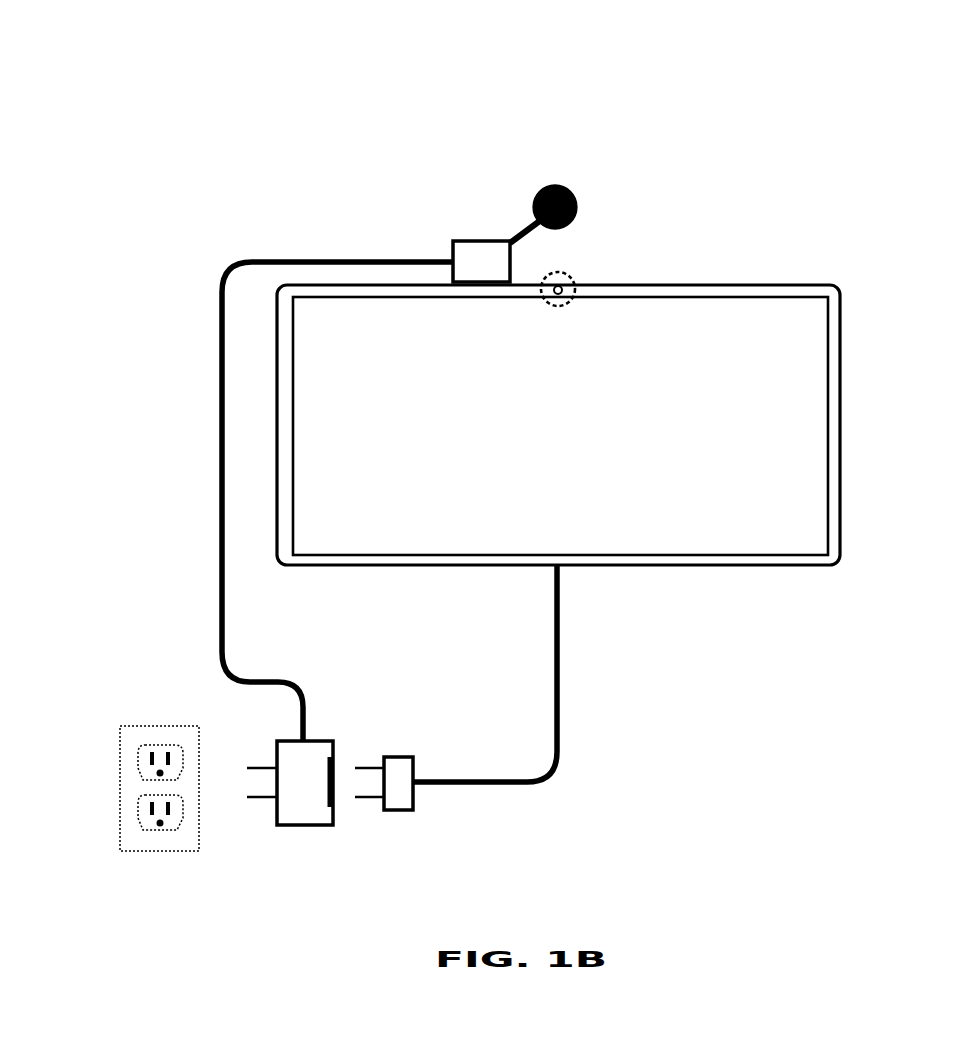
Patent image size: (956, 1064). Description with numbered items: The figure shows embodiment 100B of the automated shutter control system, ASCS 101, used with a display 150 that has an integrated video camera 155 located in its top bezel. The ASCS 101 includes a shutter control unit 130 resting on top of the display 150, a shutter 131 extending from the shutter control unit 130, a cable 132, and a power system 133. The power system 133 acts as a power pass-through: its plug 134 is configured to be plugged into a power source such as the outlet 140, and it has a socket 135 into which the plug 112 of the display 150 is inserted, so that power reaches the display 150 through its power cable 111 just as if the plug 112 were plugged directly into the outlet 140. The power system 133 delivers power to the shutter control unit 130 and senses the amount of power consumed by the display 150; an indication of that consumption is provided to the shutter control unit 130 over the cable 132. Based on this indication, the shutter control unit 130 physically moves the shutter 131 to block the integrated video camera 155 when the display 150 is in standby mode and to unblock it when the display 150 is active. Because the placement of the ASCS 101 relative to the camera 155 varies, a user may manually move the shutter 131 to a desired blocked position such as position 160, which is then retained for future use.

The embodiment 100B is at (178, 78).
The ASCS 101 is at (222, 200).
The power cable 111 is at (472, 782).
The plug 112 is at (408, 757).
The shutter control unit 130 is at (462, 241).
The shutter 131 is at (543, 190).
The cable 132 is at (228, 278).
The power system 133 is at (330, 741).
The plug 134 is at (262, 800).
The socket 135 is at (336, 800).
The outlet 140 is at (140, 726).
The display 150 is at (770, 285).
The integrated video camera 155 is at (570, 283).
The position 160 is at (563, 302).